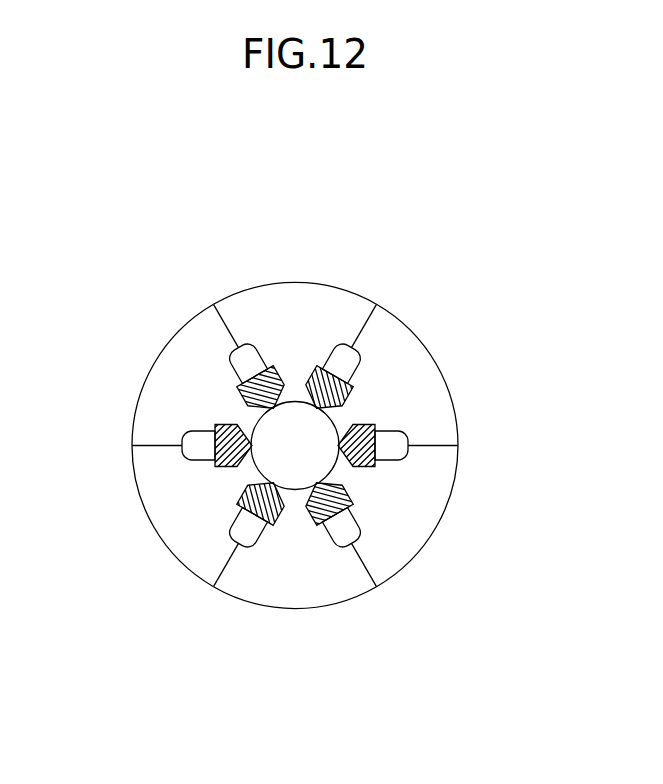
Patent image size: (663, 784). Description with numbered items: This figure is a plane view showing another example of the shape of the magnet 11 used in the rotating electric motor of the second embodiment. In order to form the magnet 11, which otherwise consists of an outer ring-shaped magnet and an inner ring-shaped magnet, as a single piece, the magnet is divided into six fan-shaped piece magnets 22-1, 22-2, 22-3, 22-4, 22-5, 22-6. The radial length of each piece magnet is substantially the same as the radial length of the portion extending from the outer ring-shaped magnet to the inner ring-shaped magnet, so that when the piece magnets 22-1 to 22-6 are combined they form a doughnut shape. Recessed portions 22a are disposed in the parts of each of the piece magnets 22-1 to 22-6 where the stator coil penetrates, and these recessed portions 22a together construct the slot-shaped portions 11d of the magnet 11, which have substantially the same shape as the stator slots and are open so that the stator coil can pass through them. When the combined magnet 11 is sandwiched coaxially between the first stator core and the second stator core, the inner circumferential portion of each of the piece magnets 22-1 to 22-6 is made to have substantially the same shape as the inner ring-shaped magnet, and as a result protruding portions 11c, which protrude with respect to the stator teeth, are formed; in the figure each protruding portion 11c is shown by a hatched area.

The magnet 11 is at (278, 207).
The protruding portions 11c is at (337, 400).
The slot-shaped portions 11d is at (347, 368).
The piece magnet 22-1 is at (308, 288).
The piece magnet 22-2 is at (428, 362).
The piece magnet 22-3 is at (433, 520).
The piece magnet 22-4 is at (300, 605).
The piece magnet 22-5 is at (155, 520).
The piece magnet 22-6 is at (172, 360).
The recessed portions 22a is at (333, 348).